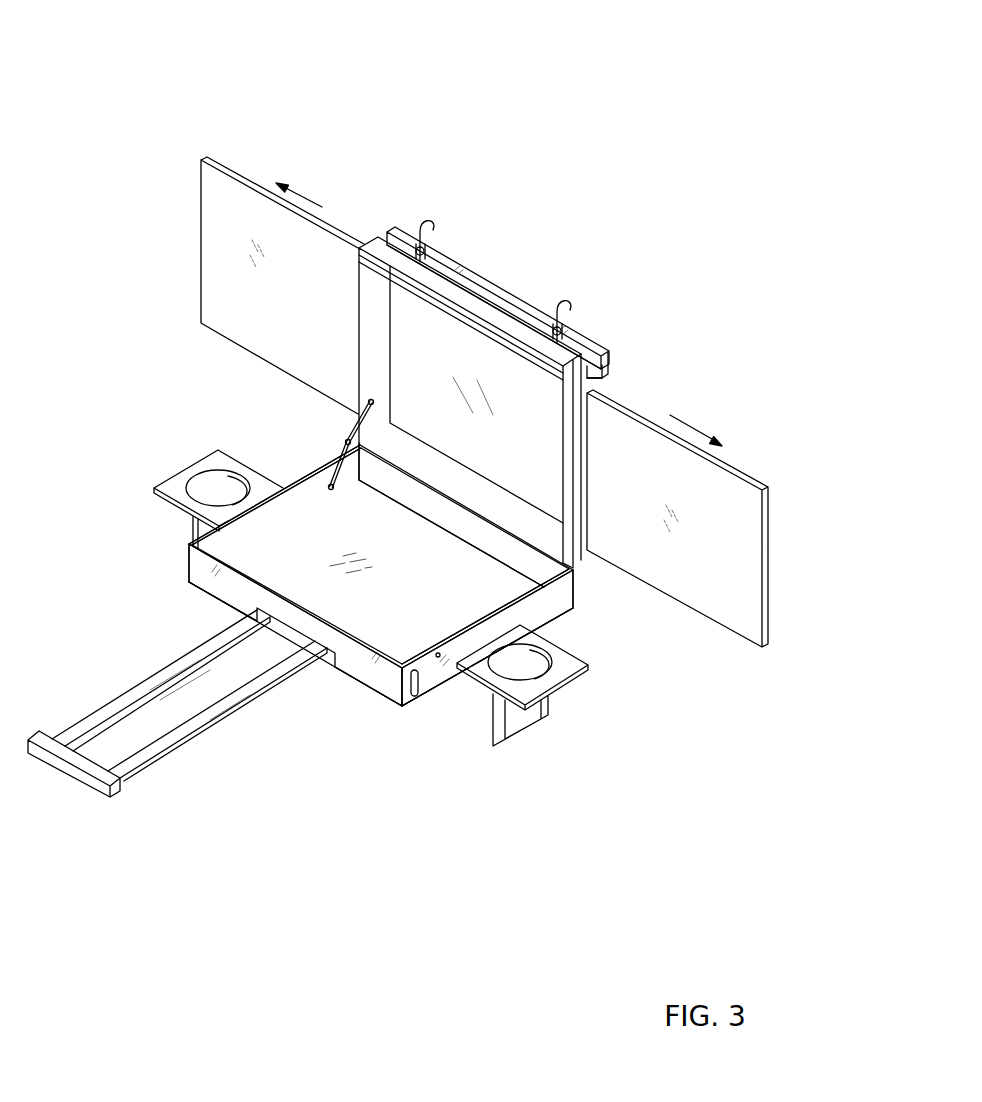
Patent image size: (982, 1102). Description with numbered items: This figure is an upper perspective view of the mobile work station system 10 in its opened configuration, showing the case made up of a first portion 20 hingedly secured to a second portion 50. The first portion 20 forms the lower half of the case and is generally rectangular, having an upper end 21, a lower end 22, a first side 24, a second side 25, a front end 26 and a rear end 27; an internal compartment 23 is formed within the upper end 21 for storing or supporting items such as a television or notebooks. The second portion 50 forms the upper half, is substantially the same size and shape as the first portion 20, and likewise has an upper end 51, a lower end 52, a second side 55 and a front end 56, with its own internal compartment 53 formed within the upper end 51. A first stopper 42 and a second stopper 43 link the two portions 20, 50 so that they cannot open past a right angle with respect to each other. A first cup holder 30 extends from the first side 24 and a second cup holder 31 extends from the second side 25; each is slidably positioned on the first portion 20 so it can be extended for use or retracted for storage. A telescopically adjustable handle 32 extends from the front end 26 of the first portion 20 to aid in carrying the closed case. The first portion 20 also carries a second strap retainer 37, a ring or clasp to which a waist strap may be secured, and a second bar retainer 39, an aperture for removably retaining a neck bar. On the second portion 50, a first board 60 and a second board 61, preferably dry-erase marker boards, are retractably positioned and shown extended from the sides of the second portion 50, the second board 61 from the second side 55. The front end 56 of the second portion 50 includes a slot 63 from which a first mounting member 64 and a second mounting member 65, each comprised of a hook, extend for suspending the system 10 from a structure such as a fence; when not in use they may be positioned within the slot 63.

The mobile work station system 10 is at (128, 72).
The first portion 20 is at (391, 605).
The upper end 21 is at (352, 658).
The lower end 22 is at (213, 598).
The internal compartment 23 is at (322, 532).
The first side 24 is at (363, 482).
The second side 25 is at (560, 583).
The front end 26 is at (200, 568).
The rear end 27 is at (577, 586).
The first cup holder 30 is at (182, 468).
The second cup holder 31 is at (573, 687).
The handle 32 is at (73, 783).
The second strap retainer 37 is at (419, 692).
The second bar retainer 39 is at (438, 657).
The first stopper 42 is at (345, 435).
The second stopper 43 is at (532, 620).
The second portion 50 is at (398, 402).
The upper end 51 is at (557, 279).
The lower end 52 is at (358, 277).
The internal compartment 53 is at (432, 327).
The second side 55 is at (606, 384).
The front end 56 is at (580, 336).
The first board 60 is at (231, 168).
The second board 61 is at (648, 415).
The slot 63 is at (517, 312).
The first mounting member 64 is at (425, 218).
The second mounting member 65 is at (557, 308).